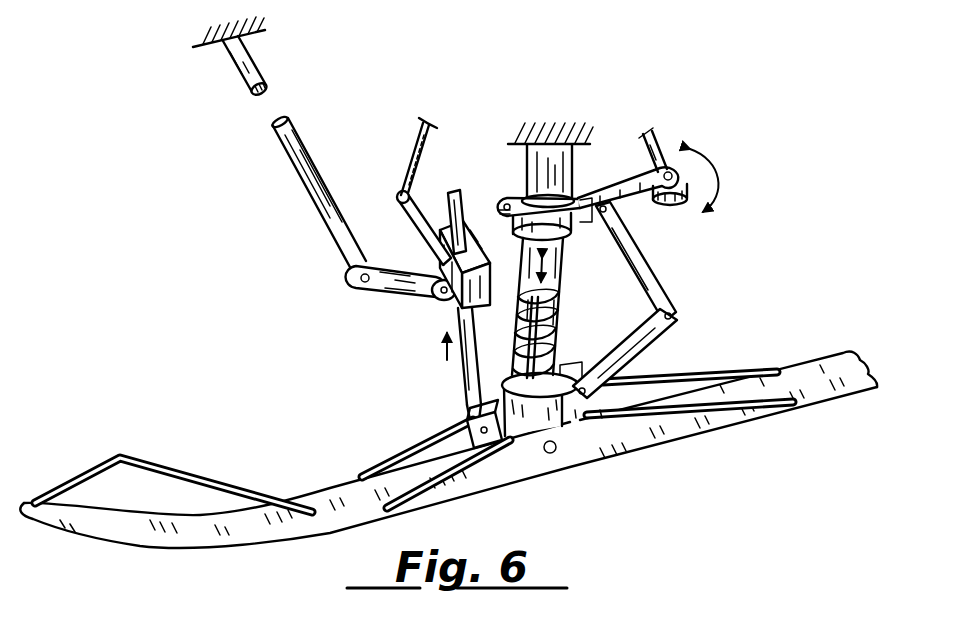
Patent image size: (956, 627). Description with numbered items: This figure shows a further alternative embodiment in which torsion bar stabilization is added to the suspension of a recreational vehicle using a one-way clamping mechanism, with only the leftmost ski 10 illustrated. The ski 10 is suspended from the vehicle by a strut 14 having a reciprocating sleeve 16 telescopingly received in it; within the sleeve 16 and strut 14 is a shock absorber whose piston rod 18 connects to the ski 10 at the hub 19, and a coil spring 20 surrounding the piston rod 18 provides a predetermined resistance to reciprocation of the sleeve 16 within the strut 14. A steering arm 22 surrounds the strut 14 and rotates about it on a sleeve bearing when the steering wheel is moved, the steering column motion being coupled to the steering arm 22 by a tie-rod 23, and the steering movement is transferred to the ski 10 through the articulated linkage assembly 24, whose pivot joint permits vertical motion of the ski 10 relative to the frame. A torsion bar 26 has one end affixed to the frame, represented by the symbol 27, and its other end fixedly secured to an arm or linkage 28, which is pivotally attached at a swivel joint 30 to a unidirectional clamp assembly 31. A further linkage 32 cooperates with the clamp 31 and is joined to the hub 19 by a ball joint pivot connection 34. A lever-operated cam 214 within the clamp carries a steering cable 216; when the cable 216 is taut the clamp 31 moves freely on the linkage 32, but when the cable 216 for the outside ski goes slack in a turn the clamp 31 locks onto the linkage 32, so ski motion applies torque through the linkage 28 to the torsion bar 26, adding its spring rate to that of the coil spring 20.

The ski 10 is at (225, 438).
The strut 14 is at (543, 183).
The reciprocating sleeve 16 is at (553, 288).
The piston rod 18 is at (560, 350).
The hub 19 is at (567, 423).
The coil spring 20 is at (520, 363).
The steering arm 22 is at (627, 197).
The tie-rod 23 is at (660, 147).
The articulated linkage assembly 24 is at (662, 282).
The torsion bar 26 is at (303, 182).
The frame symbol 27 is at (204, 30).
The arm or linkage 28 is at (381, 284).
The swivel joint 30 is at (440, 298).
The one-way clamp assembly 31 is at (465, 301).
The further linkage 32 is at (462, 373).
The ball joint pivot connection 34 is at (463, 432).
The lever-operated cam 214 is at (413, 228).
The steering cable 216 is at (413, 160).